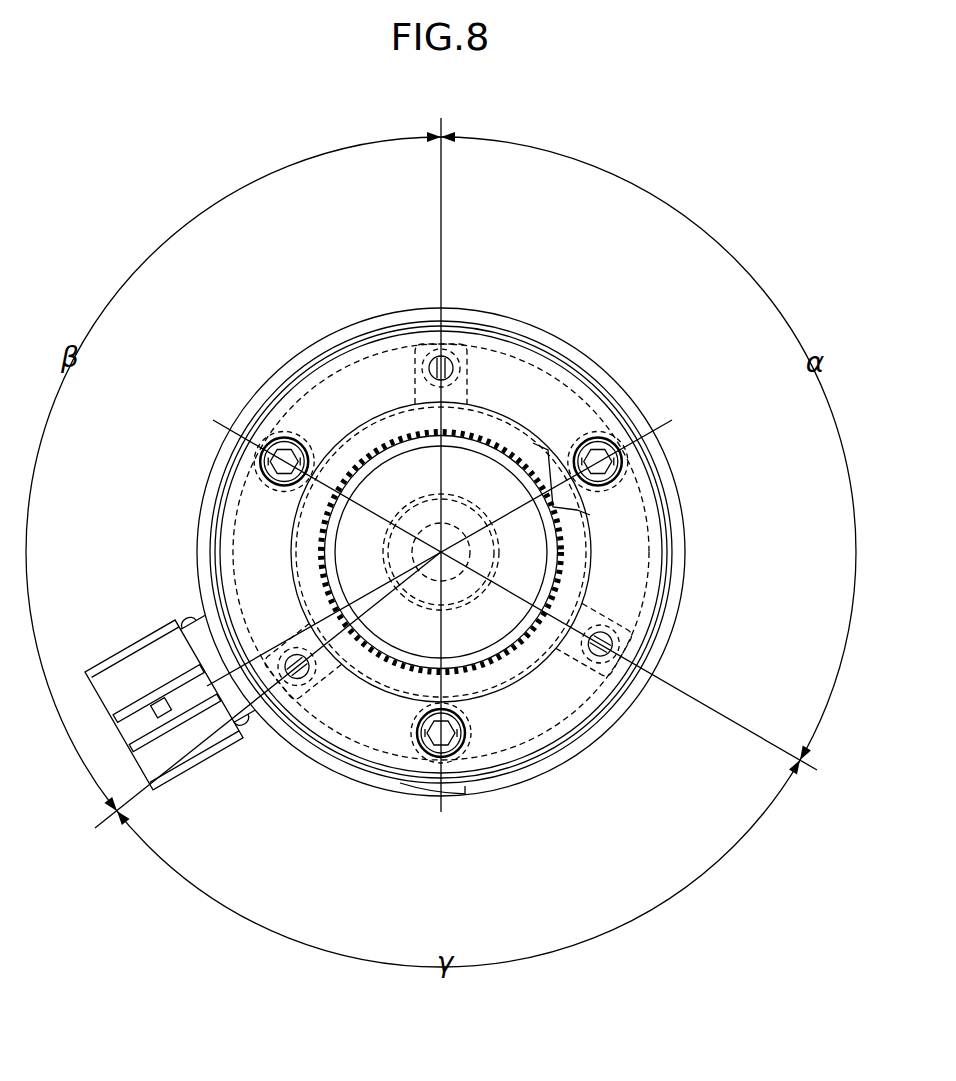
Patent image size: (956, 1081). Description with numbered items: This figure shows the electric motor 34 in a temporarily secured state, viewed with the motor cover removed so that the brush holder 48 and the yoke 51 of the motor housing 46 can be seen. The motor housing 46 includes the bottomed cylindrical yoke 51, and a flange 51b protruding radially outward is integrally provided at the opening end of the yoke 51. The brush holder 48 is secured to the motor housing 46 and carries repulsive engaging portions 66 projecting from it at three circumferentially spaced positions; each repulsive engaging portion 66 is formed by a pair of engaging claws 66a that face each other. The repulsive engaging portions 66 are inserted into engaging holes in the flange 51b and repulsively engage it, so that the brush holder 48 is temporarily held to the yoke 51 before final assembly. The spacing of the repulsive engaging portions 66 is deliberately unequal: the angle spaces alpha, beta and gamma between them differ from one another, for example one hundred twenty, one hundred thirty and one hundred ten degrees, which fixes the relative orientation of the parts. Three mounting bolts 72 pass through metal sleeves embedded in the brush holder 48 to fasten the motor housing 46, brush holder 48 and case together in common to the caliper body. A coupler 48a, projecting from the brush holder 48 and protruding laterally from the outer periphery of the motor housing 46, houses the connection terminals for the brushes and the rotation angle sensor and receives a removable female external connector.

The electric motor 34 is at (346, 784).
The motor housing 46 is at (468, 795).
The brush holder 48 is at (162, 629).
The coupler 48a is at (148, 655).
The yoke 51 is at (375, 433).
The flange 51b is at (542, 708).
The repulsive engaging portion 66 is at (464, 368).
The engaging claw 66a is at (632, 640).
The mounting bolt 72 is at (283, 447).